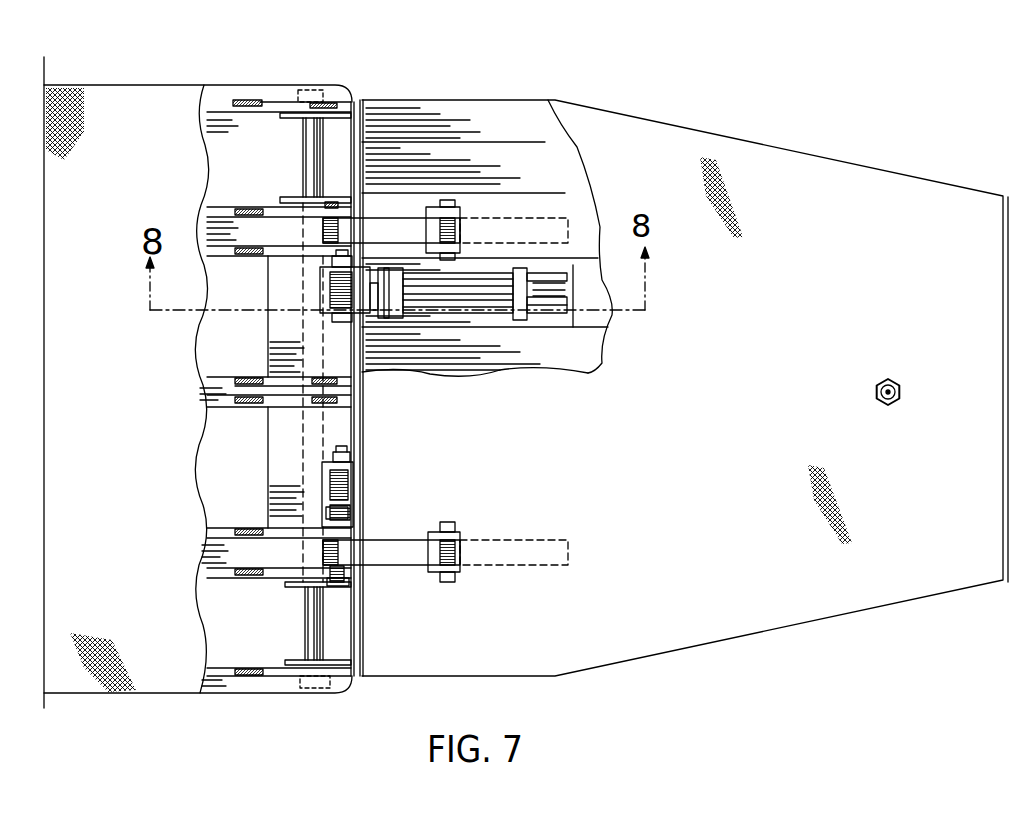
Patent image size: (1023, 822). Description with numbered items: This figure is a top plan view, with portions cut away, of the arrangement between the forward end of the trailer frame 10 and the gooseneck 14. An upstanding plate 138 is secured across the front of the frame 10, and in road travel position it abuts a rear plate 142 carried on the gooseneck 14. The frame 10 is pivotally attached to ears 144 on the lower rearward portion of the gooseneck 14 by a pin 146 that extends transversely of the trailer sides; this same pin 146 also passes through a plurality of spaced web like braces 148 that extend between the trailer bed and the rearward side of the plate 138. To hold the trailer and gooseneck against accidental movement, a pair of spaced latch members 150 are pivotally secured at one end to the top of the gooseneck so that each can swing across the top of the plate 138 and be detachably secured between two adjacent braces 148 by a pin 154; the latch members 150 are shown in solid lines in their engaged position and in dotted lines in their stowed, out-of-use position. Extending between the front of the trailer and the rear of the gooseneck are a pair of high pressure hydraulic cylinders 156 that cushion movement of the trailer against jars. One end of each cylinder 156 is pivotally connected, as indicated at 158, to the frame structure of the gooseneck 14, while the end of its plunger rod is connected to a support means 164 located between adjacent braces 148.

The frame 10 is at (127, 702).
The gooseneck 14 is at (876, 184).
The upstanding plate 138 is at (352, 432).
The rear plate 142 is at (362, 416).
The ears 144 is at (290, 197).
The pin 146 is at (320, 268).
The web like braces 148 is at (250, 113).
The latch members 150 is at (397, 220).
The pin 154 is at (341, 587).
The high pressure hydraulic cylinders 156 is at (486, 308).
The pivotal connection 158 is at (546, 320).
The support means 164 is at (312, 471).